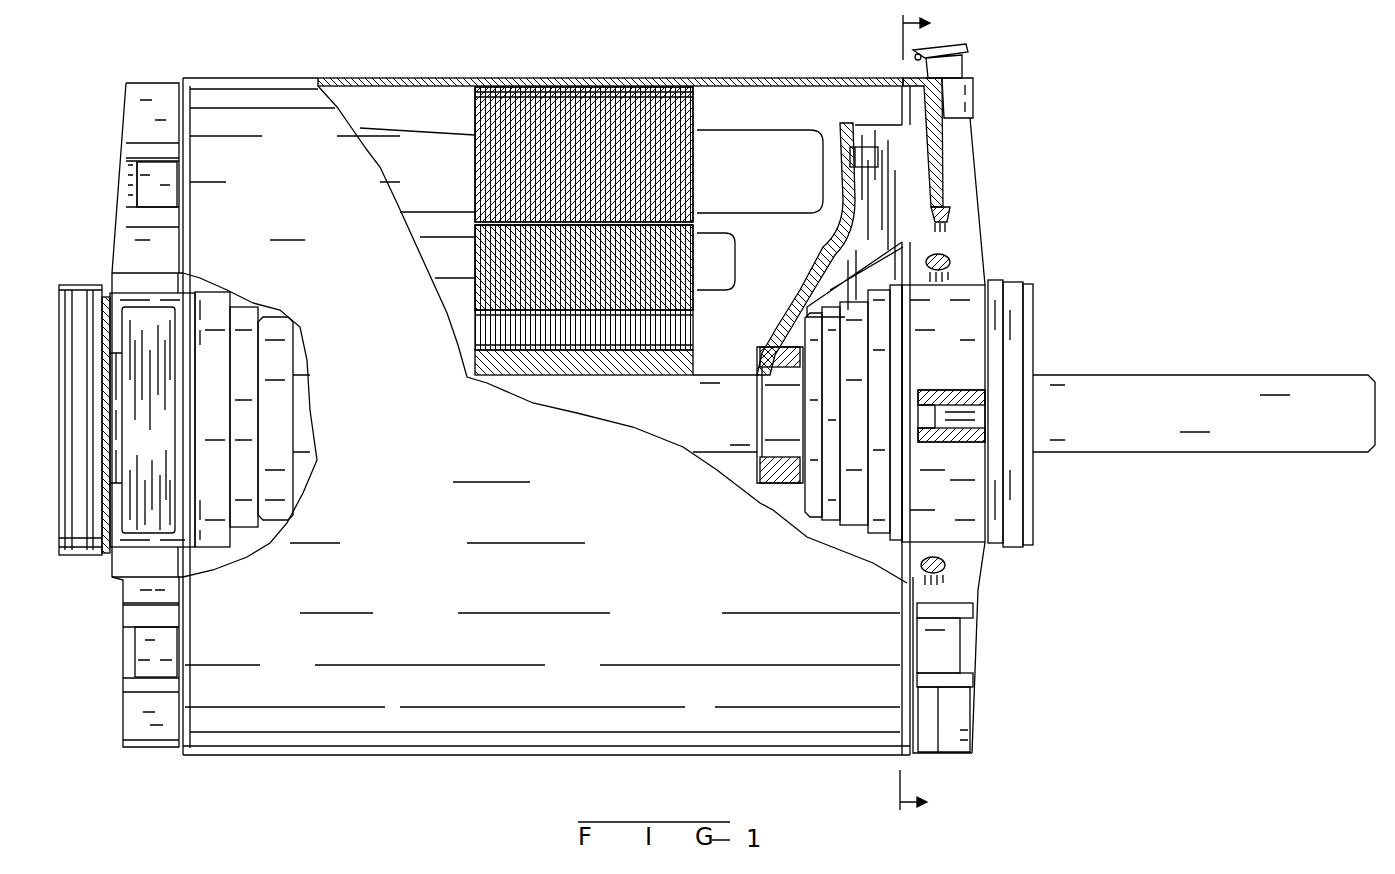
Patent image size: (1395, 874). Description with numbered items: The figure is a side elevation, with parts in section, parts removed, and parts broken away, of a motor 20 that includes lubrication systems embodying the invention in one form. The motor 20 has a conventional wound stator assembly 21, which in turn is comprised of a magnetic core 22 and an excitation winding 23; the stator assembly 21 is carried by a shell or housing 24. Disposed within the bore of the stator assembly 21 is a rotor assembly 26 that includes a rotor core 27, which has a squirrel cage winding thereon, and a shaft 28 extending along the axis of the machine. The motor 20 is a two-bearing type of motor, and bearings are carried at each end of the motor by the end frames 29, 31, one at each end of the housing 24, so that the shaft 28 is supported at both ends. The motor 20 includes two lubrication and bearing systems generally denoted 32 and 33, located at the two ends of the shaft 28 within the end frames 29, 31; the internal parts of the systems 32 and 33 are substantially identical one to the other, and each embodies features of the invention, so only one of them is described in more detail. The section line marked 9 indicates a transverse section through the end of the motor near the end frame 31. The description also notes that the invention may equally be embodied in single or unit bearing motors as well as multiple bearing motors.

The section line 9- 9 is at (926, 412).
The motor 20 is at (266, 79).
The wound stator assembly 21 is at (696, 113).
The magnetic core 22 is at (477, 122).
The excitation winding 23 is at (765, 130).
The shell or housing 24 is at (400, 78).
The rotor assembly 26 is at (696, 304).
The rotor core 27 is at (697, 372).
The shaft 28 is at (658, 418).
The end frame 29 is at (126, 137).
The end frame 31 is at (970, 140).
The lubrication and bearing system 32 is at (127, 292).
The lubrication and bearing system 33 is at (895, 540).